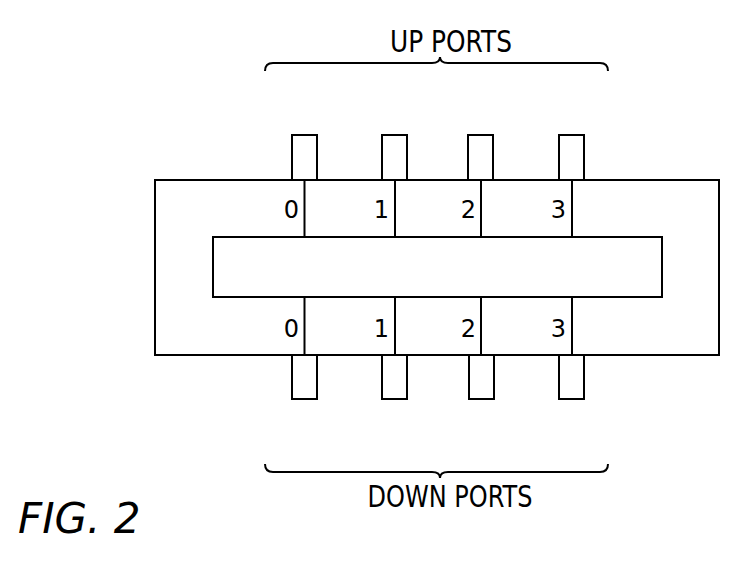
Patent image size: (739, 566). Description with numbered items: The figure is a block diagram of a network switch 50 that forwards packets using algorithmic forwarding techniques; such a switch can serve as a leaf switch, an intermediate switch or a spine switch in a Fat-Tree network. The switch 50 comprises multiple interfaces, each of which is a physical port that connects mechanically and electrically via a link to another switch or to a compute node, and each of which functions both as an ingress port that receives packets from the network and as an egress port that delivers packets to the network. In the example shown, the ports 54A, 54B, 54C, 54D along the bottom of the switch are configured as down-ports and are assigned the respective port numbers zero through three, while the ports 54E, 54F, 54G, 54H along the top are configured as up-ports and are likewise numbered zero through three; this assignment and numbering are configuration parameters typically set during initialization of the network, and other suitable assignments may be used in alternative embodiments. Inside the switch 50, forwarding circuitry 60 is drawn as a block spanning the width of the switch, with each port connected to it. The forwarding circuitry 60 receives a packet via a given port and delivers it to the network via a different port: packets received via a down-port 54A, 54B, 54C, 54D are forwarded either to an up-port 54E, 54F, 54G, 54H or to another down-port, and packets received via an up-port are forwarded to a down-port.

The network switch 50 is at (196, 180).
The forwarding circuitry 60 is at (643, 237).
The down-port 54A is at (307, 399).
The down-port 54B is at (398, 399).
The down-port 54C is at (484, 399).
The down-port 54D is at (575, 399).
The up-port 54E is at (307, 135).
The up-port 54F is at (398, 135).
The up-port 54G is at (484, 135).
The up-port 54H is at (575, 135).